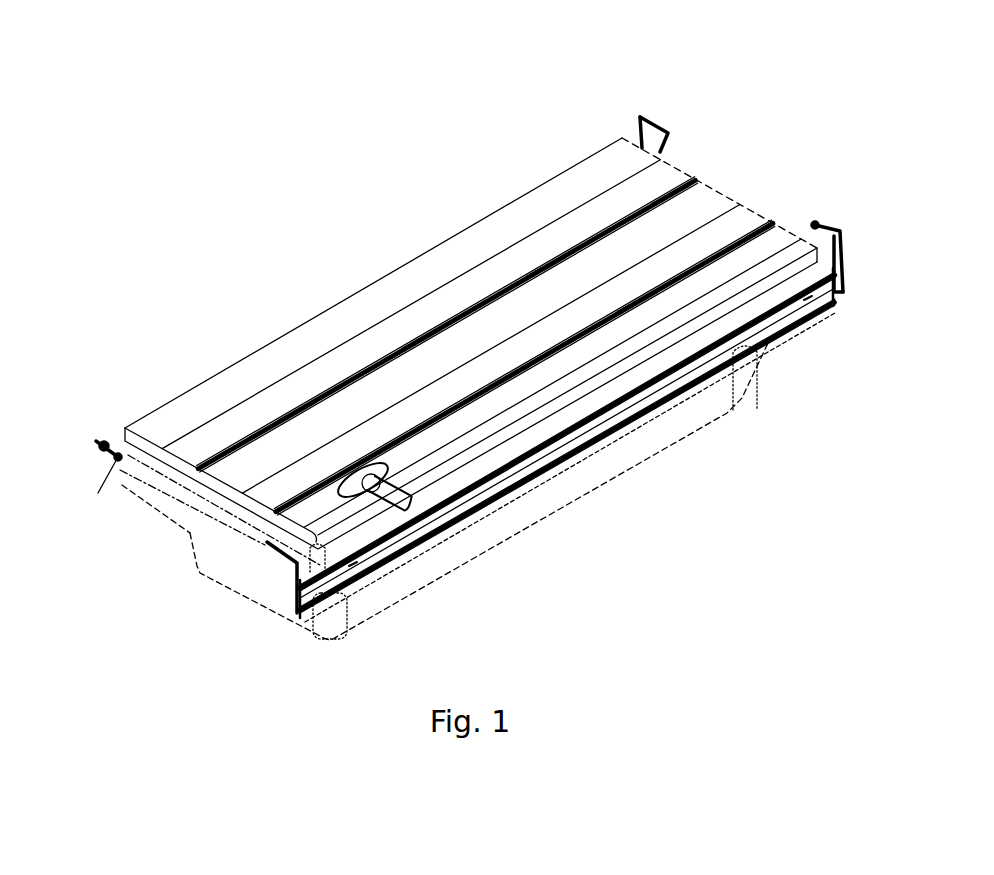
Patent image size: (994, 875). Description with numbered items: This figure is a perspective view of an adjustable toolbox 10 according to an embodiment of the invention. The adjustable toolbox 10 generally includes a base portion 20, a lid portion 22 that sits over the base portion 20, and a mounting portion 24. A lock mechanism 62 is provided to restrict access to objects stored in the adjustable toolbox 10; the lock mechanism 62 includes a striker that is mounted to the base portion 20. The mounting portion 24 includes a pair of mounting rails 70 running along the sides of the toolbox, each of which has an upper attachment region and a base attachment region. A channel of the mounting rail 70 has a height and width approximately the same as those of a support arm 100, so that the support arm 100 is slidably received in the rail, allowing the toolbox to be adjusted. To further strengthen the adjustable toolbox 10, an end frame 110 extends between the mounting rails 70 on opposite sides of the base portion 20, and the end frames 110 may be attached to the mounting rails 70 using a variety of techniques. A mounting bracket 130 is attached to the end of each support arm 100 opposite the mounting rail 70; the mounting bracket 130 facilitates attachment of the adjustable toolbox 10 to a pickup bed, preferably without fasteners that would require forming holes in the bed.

The adjustable toolbox 10 is at (447, 118).
The base portion 20 is at (622, 460).
The lid portion 22 is at (376, 296).
The mounting portion 24 is at (453, 510).
The lock mechanism 62 is at (370, 490).
The mounting rail 70 is at (548, 452).
The support arm 100 is at (810, 302).
The end frame 110 is at (168, 510).
The mounting bracket 130 is at (650, 122).